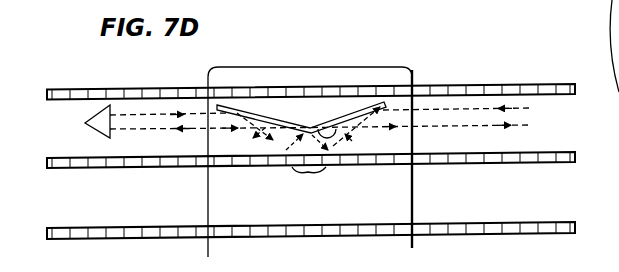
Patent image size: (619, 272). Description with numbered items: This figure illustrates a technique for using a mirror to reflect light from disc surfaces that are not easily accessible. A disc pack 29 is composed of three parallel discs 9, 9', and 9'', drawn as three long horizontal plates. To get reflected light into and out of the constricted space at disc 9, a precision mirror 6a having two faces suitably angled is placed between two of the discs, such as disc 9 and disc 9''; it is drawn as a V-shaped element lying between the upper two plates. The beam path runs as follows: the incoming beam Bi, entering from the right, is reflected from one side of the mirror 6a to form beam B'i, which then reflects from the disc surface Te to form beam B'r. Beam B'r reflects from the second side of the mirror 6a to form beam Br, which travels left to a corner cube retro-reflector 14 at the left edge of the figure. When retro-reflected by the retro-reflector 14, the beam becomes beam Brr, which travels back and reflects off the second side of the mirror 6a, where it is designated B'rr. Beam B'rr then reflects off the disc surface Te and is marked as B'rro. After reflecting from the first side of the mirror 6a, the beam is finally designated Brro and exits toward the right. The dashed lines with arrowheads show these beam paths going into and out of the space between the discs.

The corner cube retro-reflector 14 is at (96, 125).
The precision mirror 6a is at (233, 112).
The disc pack 29 is at (412, 70).
The disc 9 is at (316, 143).
The disc 9' is at (312, 216).
The disc 9'' is at (311, 77).
The beam Brr is at (157, 114).
The beam Br is at (146, 131).
The beam B'rr is at (268, 74).
The beam B'r is at (263, 171).
The disc surface Te is at (309, 187).
The beam B'i is at (353, 171).
The beam B'rro is at (349, 93).
The incoming beam Bi is at (482, 109).
The beam Brro is at (466, 131).